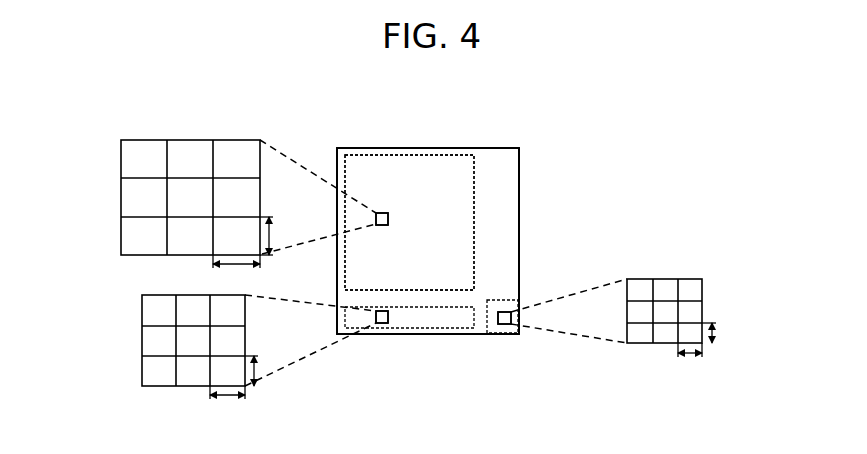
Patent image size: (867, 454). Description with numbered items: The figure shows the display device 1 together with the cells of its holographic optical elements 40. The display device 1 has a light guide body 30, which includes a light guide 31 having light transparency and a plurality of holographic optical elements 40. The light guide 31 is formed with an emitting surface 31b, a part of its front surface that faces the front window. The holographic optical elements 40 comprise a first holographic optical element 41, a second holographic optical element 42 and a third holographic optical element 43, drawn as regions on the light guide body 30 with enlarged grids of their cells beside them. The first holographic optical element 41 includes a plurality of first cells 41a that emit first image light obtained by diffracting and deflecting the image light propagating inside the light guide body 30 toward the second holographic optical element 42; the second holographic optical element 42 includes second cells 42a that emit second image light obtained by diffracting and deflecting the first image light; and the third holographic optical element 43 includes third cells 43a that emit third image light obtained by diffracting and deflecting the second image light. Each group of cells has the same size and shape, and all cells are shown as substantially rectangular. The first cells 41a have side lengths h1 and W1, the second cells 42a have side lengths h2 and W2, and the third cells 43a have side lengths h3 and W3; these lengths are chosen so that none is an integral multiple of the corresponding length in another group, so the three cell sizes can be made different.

The display device 1 is at (488, 113).
The light guide body 30 is at (525, 202).
The light guide 31 is at (510, 242).
The emitting surface 31b is at (362, 182).
The holographic optical element 40 is at (451, 240).
The first holographic optical element 41 is at (483, 336).
The first cell 41a is at (702, 298).
The second holographic optical element 42 is at (418, 336).
The second cell 42a is at (142, 356).
The third holographic optical element 43 is at (413, 153).
The third cell 43a is at (121, 217).
The first side length (height) of first cell h1 is at (725, 332).
The first side length (width) of first cell W1 is at (691, 365).
The second side length (height) of second cell h2 is at (265, 371).
The second side length (width) of second cell W2 is at (225, 407).
The third side length (height) of third cell h3 is at (281, 236).
The third side length (width) of third cell W3 is at (236, 272).